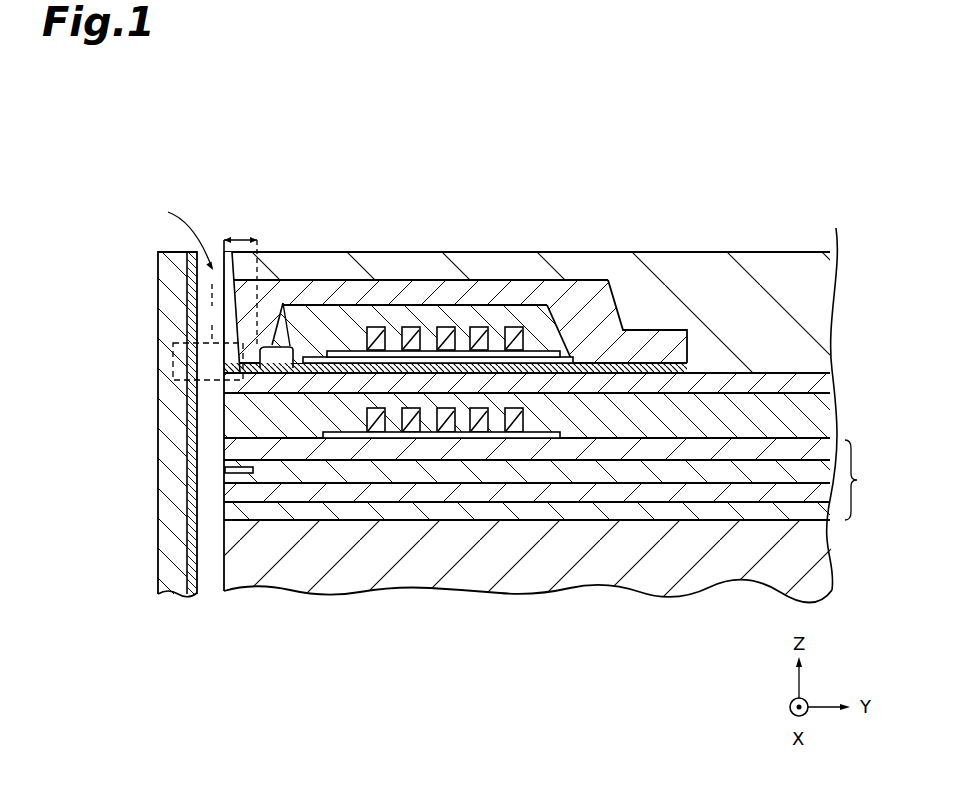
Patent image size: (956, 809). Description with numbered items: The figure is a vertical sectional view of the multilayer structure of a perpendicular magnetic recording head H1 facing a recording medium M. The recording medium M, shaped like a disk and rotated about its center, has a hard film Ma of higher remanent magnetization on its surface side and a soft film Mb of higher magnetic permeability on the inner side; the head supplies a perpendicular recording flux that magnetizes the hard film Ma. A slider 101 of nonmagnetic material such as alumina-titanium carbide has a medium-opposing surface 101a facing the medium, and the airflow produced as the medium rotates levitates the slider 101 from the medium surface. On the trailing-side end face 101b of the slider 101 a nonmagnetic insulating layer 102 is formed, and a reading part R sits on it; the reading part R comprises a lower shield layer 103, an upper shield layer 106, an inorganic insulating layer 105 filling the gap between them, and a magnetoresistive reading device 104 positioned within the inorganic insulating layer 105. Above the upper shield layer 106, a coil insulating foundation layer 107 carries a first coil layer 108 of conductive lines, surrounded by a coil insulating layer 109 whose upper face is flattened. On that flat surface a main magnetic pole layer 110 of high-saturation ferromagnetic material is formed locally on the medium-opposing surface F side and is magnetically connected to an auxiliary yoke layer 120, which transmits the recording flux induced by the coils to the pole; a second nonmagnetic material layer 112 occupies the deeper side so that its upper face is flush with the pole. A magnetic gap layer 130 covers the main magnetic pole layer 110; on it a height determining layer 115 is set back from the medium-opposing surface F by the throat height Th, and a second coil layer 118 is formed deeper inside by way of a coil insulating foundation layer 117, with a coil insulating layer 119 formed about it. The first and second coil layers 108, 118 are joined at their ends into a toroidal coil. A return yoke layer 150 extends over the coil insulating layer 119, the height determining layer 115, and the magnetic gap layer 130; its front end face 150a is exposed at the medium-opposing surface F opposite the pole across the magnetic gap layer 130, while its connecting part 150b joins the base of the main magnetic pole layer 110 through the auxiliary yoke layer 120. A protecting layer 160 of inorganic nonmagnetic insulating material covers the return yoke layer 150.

The perpendicular magnetic recording head H1 is at (120, 145).
The recording medium M is at (197, 600).
The hard film Ma is at (185, 582).
The soft film Mb is at (167, 562).
The medium-opposing surface F is at (183, 236).
The throat height Th is at (235, 240).
The reading part R is at (860, 480).
The slider 101 is at (657, 573).
The medium-opposing surface 101a is at (224, 550).
The trailing-side end face 101b is at (720, 512).
The nonmagnetic insulating layer 102 is at (224, 508).
The lower shield layer 103 is at (224, 490).
The reading device 104 is at (224, 470).
The inorganic insulating layer 105 is at (331, 477).
The upper shield layer 106 is at (224, 450).
The coil insulating foundation layer 107 is at (394, 438).
The first coil layer 108 is at (450, 433).
The coil insulating layer 109 is at (224, 426).
The main magnetic pole layer 110 is at (228, 394).
The second nonmagnetic material layer 112 is at (793, 373).
The height determining layer 115 is at (272, 340).
The coil insulating foundation layer 117 is at (325, 300).
The second coil layer 118 is at (442, 327).
The coil insulating layer 119 is at (530, 305).
The auxiliary yoke layer 120 is at (389, 327).
The magnetic gap layer 130 is at (236, 300).
The return yoke layer 150 is at (490, 295).
The front end face 150a is at (224, 290).
The connecting part 150b is at (647, 330).
The protecting layer 160 is at (734, 290).